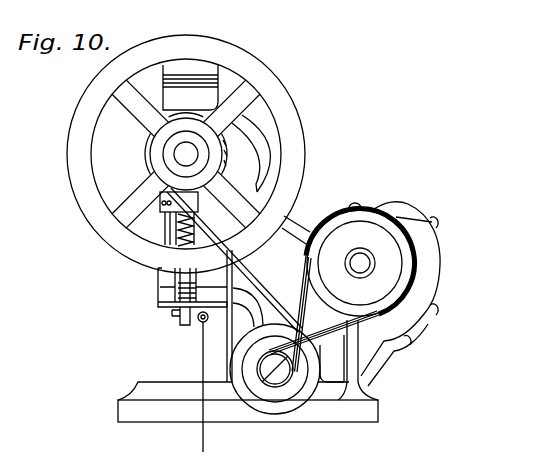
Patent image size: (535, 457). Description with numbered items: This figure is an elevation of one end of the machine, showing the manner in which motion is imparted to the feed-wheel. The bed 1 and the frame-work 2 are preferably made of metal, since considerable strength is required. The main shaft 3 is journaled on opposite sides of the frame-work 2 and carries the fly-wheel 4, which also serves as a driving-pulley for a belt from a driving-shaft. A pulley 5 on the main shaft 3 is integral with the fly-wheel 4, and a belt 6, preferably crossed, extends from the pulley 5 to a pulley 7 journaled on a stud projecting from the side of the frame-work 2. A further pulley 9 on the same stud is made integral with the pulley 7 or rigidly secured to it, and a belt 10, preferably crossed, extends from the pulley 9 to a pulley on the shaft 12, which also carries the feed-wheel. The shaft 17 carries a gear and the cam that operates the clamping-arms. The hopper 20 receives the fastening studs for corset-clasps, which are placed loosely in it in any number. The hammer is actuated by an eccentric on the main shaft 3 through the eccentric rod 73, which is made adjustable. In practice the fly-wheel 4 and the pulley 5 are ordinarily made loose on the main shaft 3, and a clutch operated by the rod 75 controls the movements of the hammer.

The bed 1 is at (378, 412).
The frame-work 2 is at (190, 87).
The main shaft 3 is at (186, 151).
The fly-wheel 4 is at (299, 151).
The pulley 5 is at (250, 158).
The belt 6 is at (252, 276).
The pulley 7 is at (282, 397).
The pulley 9 is at (275, 369).
The belt 10 is at (303, 308).
The shaft 12 is at (360, 263).
The shaft 17 is at (360, 263).
The hopper 20 is at (437, 263).
The eccentric rod 73 is at (162, 222).
The rod 75 is at (202, 352).